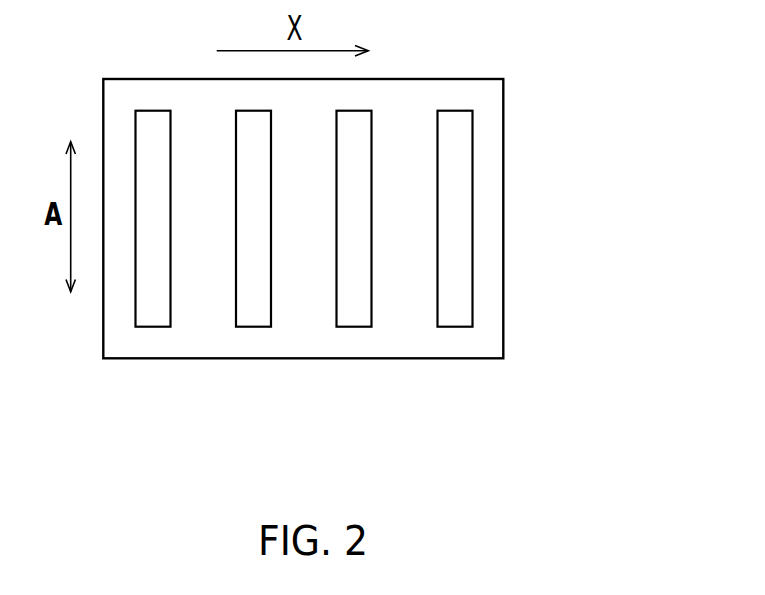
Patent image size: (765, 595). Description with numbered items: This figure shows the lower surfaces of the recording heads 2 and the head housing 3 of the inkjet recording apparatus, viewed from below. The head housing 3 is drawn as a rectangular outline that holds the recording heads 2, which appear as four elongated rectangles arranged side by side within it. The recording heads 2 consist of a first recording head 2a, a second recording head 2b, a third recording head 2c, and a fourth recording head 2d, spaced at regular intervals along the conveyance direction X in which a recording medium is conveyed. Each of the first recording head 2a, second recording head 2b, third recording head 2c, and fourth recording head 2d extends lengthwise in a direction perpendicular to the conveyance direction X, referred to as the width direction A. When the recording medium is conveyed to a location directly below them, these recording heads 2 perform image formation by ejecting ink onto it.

The recording heads 2 is at (308, 290).
The first recording head 2a is at (149, 313).
The second recording head 2b is at (250, 313).
The third recording head 2c is at (350, 313).
The fourth recording head 2d is at (455, 260).
The head housing 3 is at (487, 98).